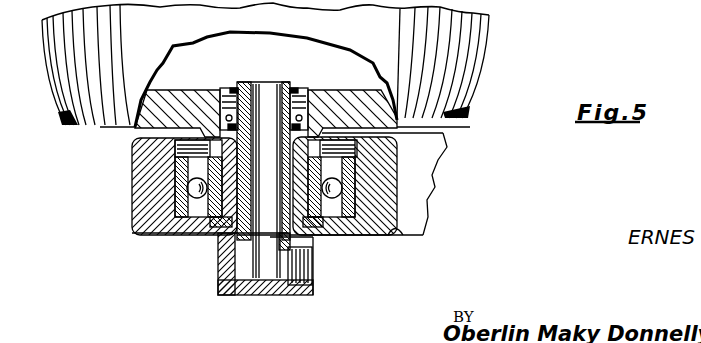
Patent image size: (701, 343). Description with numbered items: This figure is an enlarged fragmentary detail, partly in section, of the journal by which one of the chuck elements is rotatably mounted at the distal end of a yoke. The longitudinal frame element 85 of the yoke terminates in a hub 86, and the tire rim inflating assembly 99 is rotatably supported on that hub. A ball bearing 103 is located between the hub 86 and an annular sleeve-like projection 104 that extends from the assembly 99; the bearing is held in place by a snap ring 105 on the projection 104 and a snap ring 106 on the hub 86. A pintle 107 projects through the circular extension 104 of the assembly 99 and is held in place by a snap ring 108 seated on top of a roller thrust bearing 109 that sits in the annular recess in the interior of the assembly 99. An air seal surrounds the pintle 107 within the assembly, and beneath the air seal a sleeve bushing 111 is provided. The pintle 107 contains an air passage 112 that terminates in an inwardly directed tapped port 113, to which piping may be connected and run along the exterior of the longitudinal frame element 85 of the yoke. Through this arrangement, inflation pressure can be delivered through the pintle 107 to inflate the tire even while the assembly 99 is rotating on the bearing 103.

The tire rim inflating assembly 99 is at (491, 34).
The air passage 112 is at (256, 83).
The sleeve bushing 111 is at (266, 181).
The snap ring 108 is at (289, 86).
The roller thrust bearing 109 is at (312, 108).
The ball bearing 103 is at (192, 226).
The annular sleeve-like projection 104 is at (221, 232).
The snap ring 106 is at (396, 152).
The snap ring 105 is at (307, 224).
The longitudinal frame element 85 is at (433, 175).
The hub 86 is at (403, 236).
The pintle 107 is at (260, 288).
The tapped port 113 is at (313, 273).